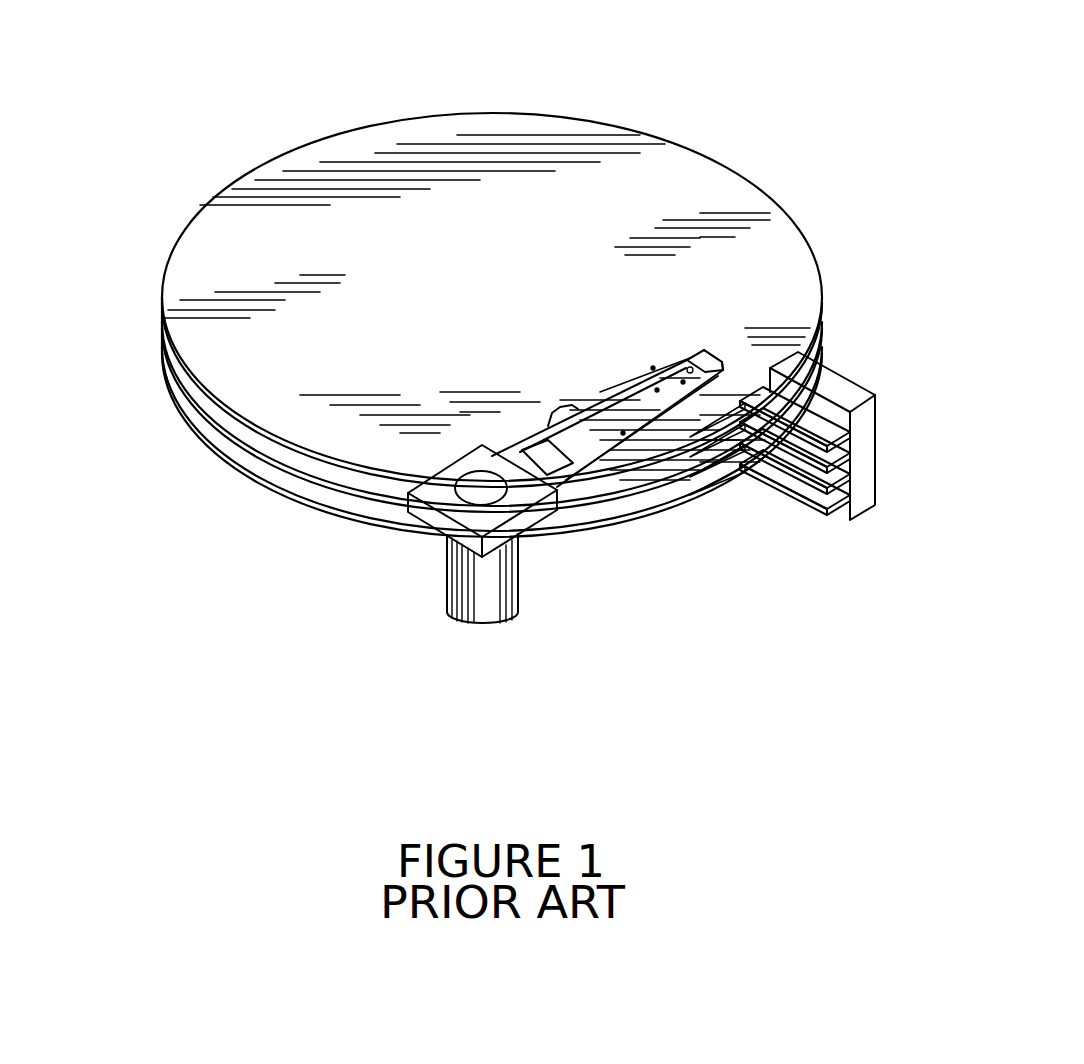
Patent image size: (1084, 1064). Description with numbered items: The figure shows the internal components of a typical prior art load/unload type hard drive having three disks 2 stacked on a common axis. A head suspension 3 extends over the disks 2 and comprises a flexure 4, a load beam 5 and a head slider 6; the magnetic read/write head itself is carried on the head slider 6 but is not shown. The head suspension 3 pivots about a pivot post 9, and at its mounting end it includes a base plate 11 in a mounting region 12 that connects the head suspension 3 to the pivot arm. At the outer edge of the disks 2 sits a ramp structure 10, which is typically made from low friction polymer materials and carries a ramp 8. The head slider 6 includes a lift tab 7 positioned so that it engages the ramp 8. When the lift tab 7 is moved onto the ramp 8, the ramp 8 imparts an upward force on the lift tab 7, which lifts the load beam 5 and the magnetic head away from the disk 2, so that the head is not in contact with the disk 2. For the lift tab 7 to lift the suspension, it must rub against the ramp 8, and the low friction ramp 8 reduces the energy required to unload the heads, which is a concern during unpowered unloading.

The disks 2 is at (441, 346).
The head suspension 3 is at (642, 257).
The flexure 4 is at (718, 498).
The load beam 5 is at (643, 216).
The head slider 6 is at (751, 236).
The lift tab 7 is at (823, 325).
The ramp 8 is at (789, 356).
The pivot post 9 is at (435, 603).
The ramp structure 10 is at (858, 367).
The base plate 11 is at (391, 536).
The mounting region 12 is at (523, 258).